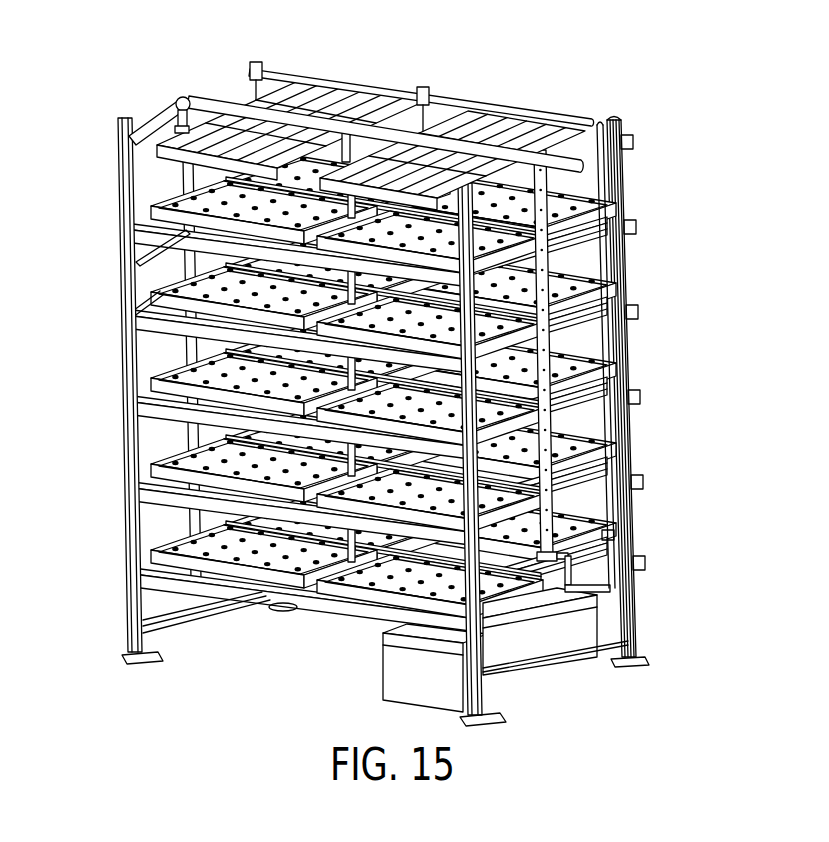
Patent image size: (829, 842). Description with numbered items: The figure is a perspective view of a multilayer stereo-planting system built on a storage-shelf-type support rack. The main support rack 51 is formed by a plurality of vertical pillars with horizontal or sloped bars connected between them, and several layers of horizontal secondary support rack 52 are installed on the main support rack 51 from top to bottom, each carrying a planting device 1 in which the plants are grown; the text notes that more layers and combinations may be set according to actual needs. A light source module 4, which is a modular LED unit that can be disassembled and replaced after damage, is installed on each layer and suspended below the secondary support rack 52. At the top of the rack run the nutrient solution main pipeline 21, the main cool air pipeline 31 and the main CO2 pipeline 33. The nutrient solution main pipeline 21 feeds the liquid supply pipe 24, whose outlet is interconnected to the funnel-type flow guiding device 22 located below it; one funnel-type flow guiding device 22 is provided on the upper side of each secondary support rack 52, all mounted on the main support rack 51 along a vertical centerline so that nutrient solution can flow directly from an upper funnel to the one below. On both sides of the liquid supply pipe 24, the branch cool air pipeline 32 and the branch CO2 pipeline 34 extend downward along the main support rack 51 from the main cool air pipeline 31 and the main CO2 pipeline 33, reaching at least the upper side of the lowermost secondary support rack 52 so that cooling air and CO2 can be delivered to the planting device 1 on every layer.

The planting device 1 is at (163, 297).
The light source module 4 is at (180, 238).
The nutrient solution main pipeline 21 is at (590, 118).
The funnel-type flow guiding device 22 is at (177, 133).
The liquid supply pipe 24 is at (262, 68).
The main cool air pipeline 31 is at (583, 165).
The branch cool air pipeline 32 is at (611, 280).
The main CO2 pipeline 33 is at (632, 143).
The branch CO2 pipeline 34 is at (635, 232).
The main support rack 51 is at (626, 378).
The secondary support rack 52 is at (153, 402).